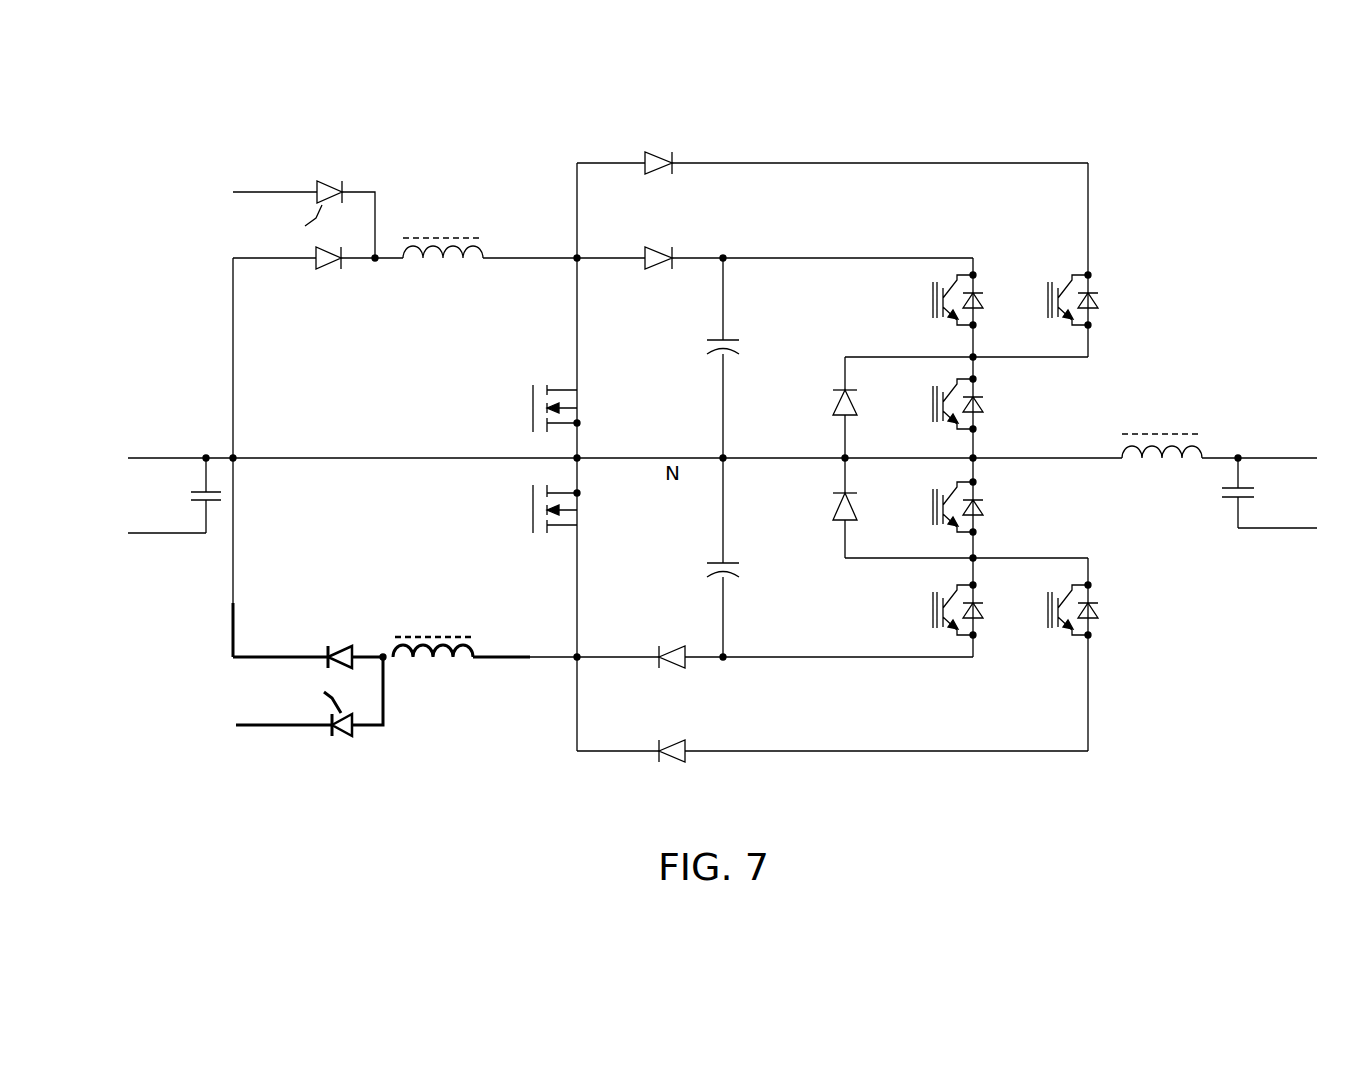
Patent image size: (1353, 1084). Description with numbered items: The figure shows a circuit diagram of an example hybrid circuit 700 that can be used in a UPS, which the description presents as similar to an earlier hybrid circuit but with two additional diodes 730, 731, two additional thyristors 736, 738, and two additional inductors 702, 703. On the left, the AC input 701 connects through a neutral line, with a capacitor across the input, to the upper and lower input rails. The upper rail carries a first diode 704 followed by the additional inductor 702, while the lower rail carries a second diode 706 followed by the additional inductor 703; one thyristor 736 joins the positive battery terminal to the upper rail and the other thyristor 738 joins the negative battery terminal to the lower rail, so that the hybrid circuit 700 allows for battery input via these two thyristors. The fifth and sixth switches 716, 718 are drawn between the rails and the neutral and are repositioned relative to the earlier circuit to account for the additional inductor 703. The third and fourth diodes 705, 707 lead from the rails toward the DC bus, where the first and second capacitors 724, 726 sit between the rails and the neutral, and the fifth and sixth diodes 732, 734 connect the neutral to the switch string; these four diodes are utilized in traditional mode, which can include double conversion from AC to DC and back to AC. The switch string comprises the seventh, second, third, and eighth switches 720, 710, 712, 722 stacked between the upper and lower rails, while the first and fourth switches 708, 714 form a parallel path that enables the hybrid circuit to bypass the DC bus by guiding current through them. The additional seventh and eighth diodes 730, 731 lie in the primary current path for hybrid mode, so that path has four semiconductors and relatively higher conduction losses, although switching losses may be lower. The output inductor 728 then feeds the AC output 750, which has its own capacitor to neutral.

The hybrid circuit 700 is at (1195, 230).
The AC input 701 is at (143, 455).
The inductor 702 is at (443, 238).
The inductor 703 is at (440, 636).
The diode D1 704 is at (332, 300).
The diode D3 705 is at (658, 243).
The diode D2 706 is at (350, 648).
The diode D4 707 is at (670, 672).
The switch S1 708 is at (1102, 298).
The switch S2 710 is at (983, 405).
The switch S3 712 is at (985, 505).
The switch S4 714 is at (1103, 612).
The switch S5 716 is at (497, 410).
The switch S6 718 is at (497, 512).
The switch S7 720 is at (980, 285).
The switch S8 722 is at (983, 625).
The capacitor C1 724 is at (728, 335).
The capacitor C2 726 is at (733, 585).
The inductor L2 728 is at (1162, 430).
The diode D7 730 is at (663, 148).
The diode D8 731 is at (688, 772).
The diode D5 732 is at (832, 400).
The diode D6 734 is at (832, 500).
The thyristor D9 736 is at (332, 180).
The thyristor D10 738 is at (347, 737).
The AC output 750 is at (1270, 455).